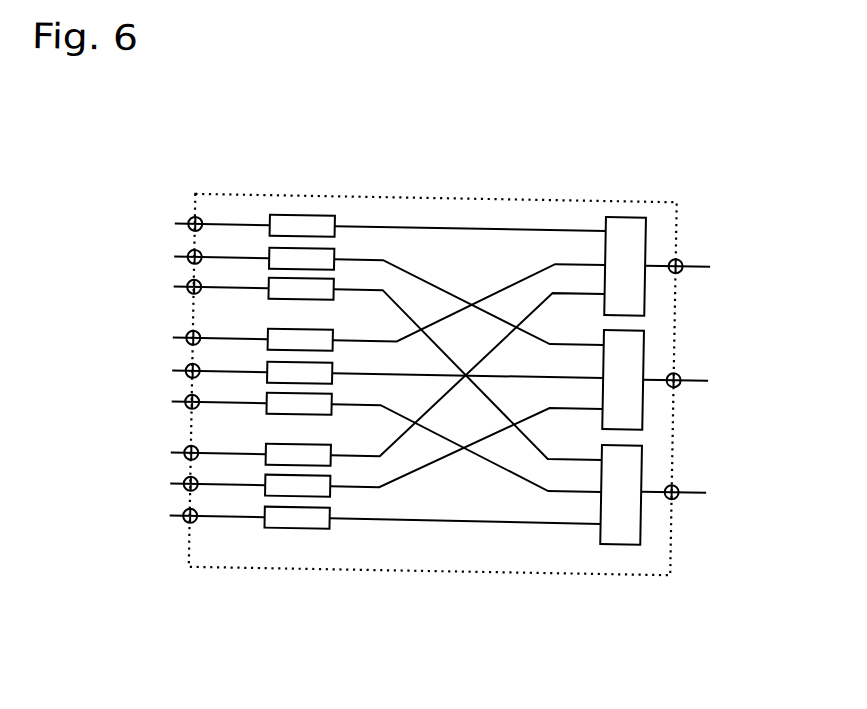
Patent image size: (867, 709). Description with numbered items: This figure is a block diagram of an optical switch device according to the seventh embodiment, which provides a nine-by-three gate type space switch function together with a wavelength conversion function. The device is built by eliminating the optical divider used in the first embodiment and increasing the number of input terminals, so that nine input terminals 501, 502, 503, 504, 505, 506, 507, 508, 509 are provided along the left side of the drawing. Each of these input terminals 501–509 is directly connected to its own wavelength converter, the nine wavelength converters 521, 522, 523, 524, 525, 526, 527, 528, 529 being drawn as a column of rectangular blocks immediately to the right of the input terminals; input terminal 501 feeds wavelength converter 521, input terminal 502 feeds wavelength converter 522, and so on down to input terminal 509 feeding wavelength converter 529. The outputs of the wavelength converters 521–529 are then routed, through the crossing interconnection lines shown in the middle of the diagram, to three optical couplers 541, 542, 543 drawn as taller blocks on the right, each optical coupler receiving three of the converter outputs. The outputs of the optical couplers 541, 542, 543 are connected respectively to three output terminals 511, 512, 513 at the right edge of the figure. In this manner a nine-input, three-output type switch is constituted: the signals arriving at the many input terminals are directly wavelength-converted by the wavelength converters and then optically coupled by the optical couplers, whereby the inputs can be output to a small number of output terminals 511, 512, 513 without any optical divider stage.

The input terminal 501 is at (179, 226).
The input terminal 502 is at (180, 259).
The input terminal 503 is at (180, 289).
The input terminal 504 is at (181, 340).
The input terminal 505 is at (182, 373).
The input terminal 506 is at (182, 404).
The input terminal 507 is at (183, 455).
The input terminal 508 is at (184, 486).
The input terminal 509 is at (184, 517).
The wavelength converter 521 is at (319, 217).
The wavelength converter 522 is at (331, 251).
The wavelength converter 523 is at (329, 282).
The wavelength converter 524 is at (329, 335).
The wavelength converter 525 is at (333, 369).
The wavelength converter 526 is at (332, 415).
The wavelength converter 527 is at (332, 464).
The wavelength converter 528 is at (333, 496).
The wavelength converter 529 is at (316, 532).
The optical coupler 541 is at (644, 233).
The optical coupler 542 is at (645, 346).
The optical coupler 543 is at (646, 464).
The output terminal 511 is at (675, 256).
The output terminal 512 is at (677, 374).
The output terminal 513 is at (678, 482).